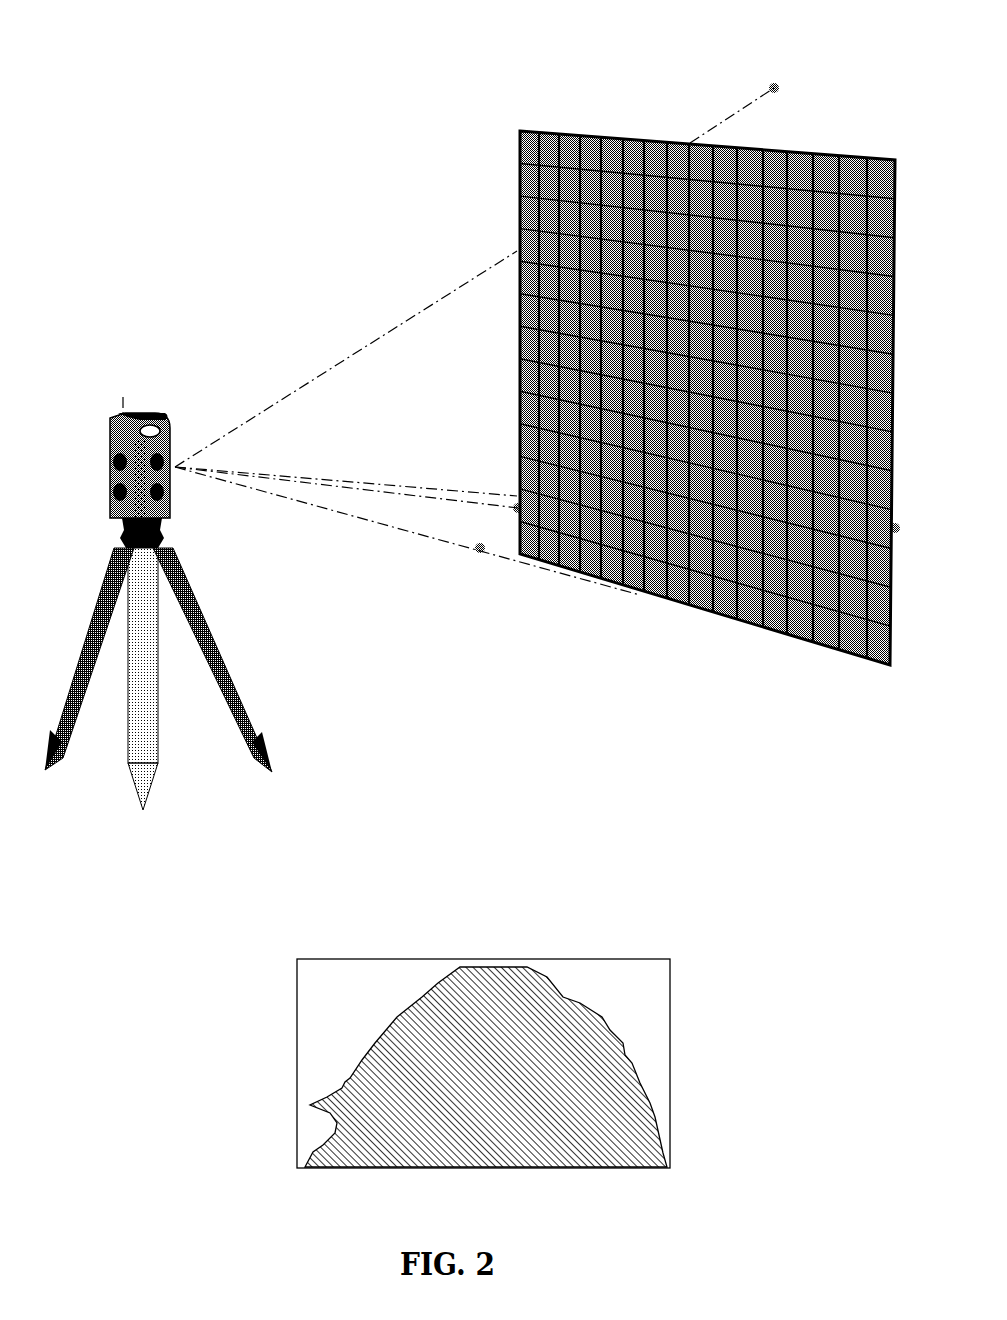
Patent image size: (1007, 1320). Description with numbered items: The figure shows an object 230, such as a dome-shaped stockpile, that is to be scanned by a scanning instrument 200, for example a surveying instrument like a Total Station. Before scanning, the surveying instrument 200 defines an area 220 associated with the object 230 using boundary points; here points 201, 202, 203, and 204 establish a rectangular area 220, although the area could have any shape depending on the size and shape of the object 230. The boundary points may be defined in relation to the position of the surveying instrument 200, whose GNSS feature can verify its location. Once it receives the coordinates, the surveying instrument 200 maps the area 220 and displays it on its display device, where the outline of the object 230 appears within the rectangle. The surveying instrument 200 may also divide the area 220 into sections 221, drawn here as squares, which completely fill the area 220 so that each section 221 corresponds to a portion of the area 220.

The scanning instrument 200 is at (187, 601).
The point 201 is at (780, 78).
The point 202 is at (517, 498).
The point 203 is at (481, 553).
The point 204 is at (902, 532).
The area associated with the object 220 is at (609, 618).
The section 221 is at (850, 640).
The object 230 is at (583, 1007).